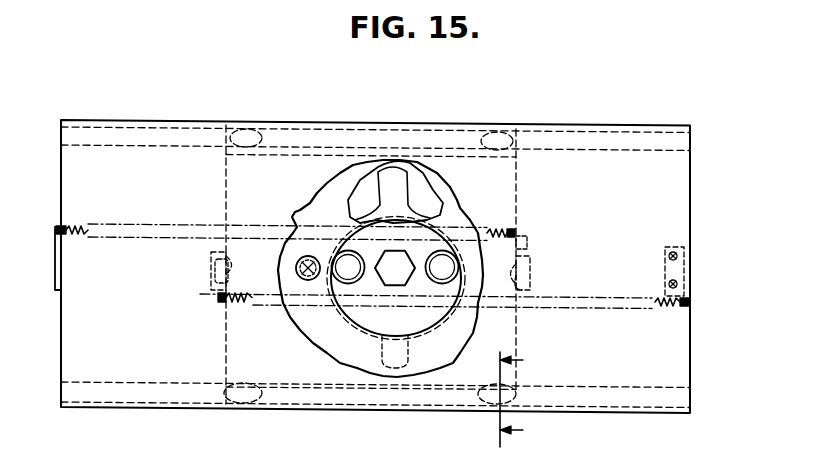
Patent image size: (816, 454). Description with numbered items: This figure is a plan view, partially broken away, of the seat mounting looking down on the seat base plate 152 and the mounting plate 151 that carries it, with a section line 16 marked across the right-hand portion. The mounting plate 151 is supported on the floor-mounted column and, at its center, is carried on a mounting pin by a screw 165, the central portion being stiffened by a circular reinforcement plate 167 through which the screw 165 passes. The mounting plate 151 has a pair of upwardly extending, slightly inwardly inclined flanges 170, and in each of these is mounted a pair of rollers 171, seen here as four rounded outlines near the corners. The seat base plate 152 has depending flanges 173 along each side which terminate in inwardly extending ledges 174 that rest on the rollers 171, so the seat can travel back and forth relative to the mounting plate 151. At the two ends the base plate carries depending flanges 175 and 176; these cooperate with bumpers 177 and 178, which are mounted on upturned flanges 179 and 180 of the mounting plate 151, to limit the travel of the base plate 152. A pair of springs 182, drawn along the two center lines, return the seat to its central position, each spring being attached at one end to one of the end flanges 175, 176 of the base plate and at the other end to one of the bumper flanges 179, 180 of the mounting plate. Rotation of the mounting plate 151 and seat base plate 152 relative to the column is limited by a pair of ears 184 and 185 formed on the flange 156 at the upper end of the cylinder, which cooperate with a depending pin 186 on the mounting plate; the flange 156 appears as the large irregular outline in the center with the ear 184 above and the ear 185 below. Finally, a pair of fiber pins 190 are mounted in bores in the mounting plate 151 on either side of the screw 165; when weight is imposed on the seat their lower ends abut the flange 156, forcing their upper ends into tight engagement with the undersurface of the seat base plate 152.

The section line 16- 16 is at (524, 399).
The mounting plate 151 is at (221, 356).
The seat base plate 152 is at (694, 348).
The flange 156 is at (417, 217).
The screw 165 is at (403, 283).
The circular reinforcement plate 167 is at (381, 318).
The upwardly extending flanges 170 is at (292, 155).
The rollers 171 is at (227, 122).
The depending flanges 173 is at (610, 132).
The inwardly extending ledges 174 is at (654, 150).
The end flange 175 is at (53, 280).
The end flange 176 is at (693, 268).
The bumper 177 is at (209, 265).
The bumper 178 is at (523, 257).
The upturned flange 179 is at (208, 290).
The upturned flange 180 is at (530, 286).
The springs 182 is at (125, 224).
The ear 184 is at (397, 180).
The ear 185 is at (423, 378).
The depending pin 186 is at (302, 262).
The fiber pins 190 is at (444, 266).